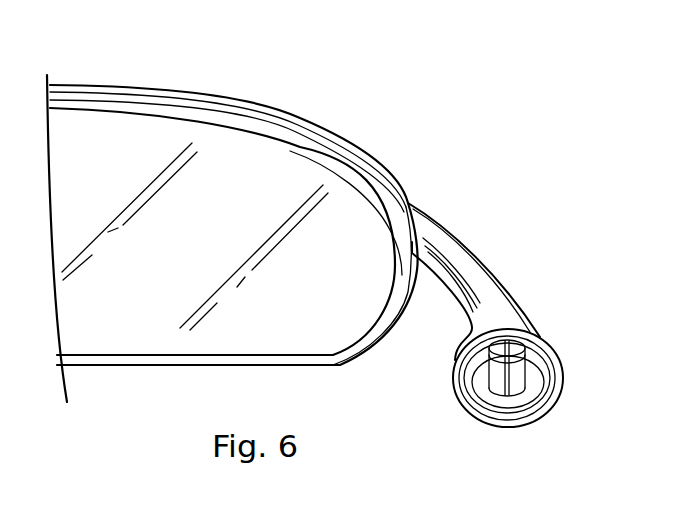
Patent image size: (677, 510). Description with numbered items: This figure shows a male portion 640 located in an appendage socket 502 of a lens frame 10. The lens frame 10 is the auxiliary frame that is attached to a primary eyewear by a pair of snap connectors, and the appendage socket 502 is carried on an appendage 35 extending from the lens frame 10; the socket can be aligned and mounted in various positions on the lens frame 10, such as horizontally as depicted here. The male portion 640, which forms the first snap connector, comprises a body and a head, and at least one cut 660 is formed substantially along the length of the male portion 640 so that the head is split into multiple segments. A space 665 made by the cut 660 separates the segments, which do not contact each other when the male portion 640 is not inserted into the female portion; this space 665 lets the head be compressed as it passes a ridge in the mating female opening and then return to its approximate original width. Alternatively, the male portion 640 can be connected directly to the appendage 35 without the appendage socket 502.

The lens frame 10 is at (253, 94).
The appendage 35 is at (463, 238).
The appendage socket 502 is at (562, 366).
The cut 660 is at (538, 367).
The male portion 640 is at (526, 342).
The space 665 is at (510, 352).